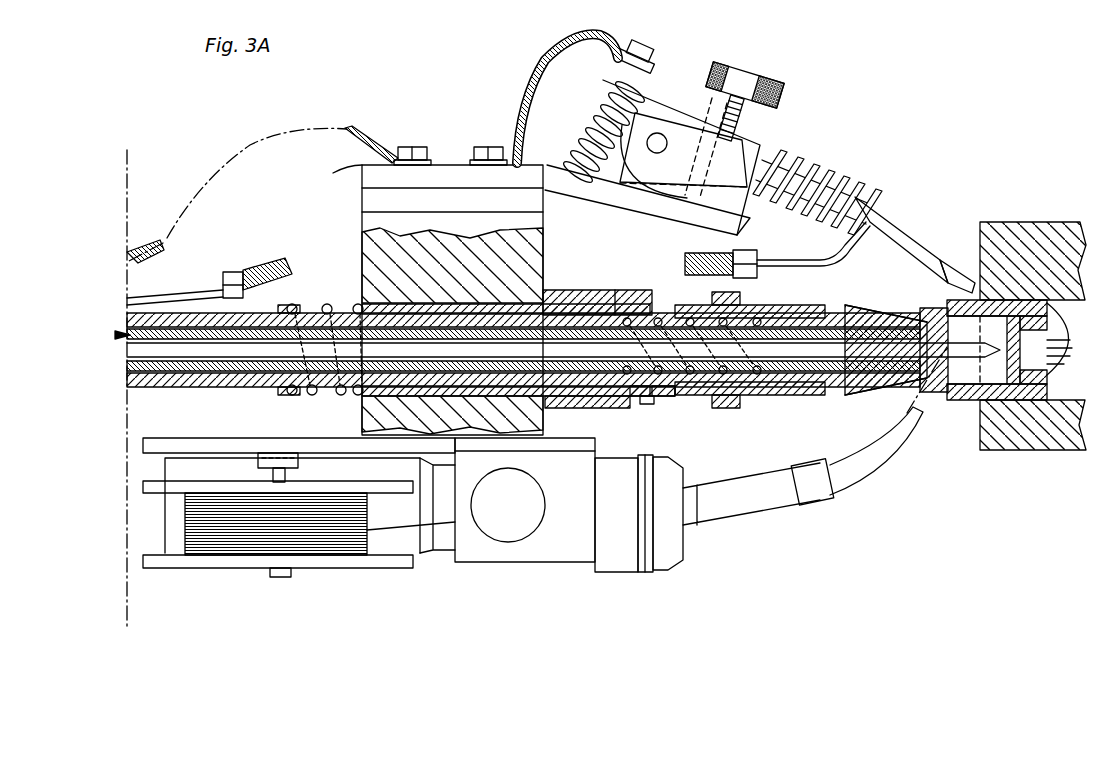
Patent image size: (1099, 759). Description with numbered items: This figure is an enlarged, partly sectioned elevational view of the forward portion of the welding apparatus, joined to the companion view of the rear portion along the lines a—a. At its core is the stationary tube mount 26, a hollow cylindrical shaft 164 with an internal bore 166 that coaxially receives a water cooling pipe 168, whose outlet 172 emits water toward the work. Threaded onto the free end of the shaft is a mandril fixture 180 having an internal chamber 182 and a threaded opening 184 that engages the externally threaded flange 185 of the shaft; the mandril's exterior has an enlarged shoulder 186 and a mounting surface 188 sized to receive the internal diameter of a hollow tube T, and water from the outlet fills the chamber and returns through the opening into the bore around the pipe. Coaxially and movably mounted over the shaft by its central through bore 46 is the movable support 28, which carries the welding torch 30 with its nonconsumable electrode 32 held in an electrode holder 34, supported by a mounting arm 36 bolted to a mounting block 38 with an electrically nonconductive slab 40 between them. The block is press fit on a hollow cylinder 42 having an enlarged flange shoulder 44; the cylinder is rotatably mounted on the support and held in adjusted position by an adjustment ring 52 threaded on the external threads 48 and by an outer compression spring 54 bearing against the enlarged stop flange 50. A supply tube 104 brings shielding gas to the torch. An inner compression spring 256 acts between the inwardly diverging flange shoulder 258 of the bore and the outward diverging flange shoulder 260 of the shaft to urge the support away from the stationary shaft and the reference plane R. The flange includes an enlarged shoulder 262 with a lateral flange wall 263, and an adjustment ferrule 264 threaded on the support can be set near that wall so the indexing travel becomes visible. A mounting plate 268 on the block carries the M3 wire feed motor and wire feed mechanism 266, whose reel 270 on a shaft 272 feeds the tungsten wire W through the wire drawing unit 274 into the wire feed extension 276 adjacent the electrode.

The stationary tube mount 26 is at (114, 335).
The movable support 28 is at (127, 322).
The welding torch 30 is at (803, 140).
The nonconsumable electrode 32 is at (941, 262).
The electrode holder 34 is at (907, 240).
The mounting arm 36 is at (432, 168).
The mounting block 38 is at (528, 277).
The electrically nonconductive slab 40 is at (542, 198).
The hollow cylinder 42 is at (367, 306).
The enlarged flange shoulder 44 is at (600, 298).
The central through bore 46 is at (125, 365).
The external threads 48 is at (692, 393).
The enlarged stop flange 50 is at (282, 392).
The adjustment ring 52 is at (646, 400).
The outer compression spring 54 is at (303, 393).
The supply tube 104 is at (127, 300).
The hollow cylindrical shaft 164 is at (548, 405).
The internal bore 166 is at (390, 357).
The water cooling pipe 168 is at (127, 345).
The outlet 172 is at (977, 381).
The mandril fixture 180 is at (932, 310).
The internal chamber 182 is at (1045, 300).
The threaded opening 184 is at (918, 367).
The externally threaded flange 185 is at (917, 310).
The enlarged shoulder 186 is at (935, 382).
The mounting surface 188 is at (977, 400).
The inner compression spring 256 is at (745, 372).
The inwardly diverging flange shoulder 258 is at (631, 397).
The outward diverging flange shoulder 260 is at (768, 375).
The enlarged shoulder 262 is at (853, 313).
The lateral flange wall 263 is at (843, 308).
The adjustment ferrule 264 is at (802, 306).
The wire feed mechanism 266 is at (512, 562).
The mounting plate 268 is at (190, 447).
The reel 270 is at (312, 565).
The shaft 272 is at (290, 471).
The wire drawing unit 274 is at (580, 529).
The wire feed extension 276 is at (730, 507).
The tungsten wire W is at (387, 530).
The reference plane R is at (978, 297).
The hollow tube T is at (1060, 390).
The wire feed motor M3 is at (418, 555).
The joining line a— a is at (235, 391).